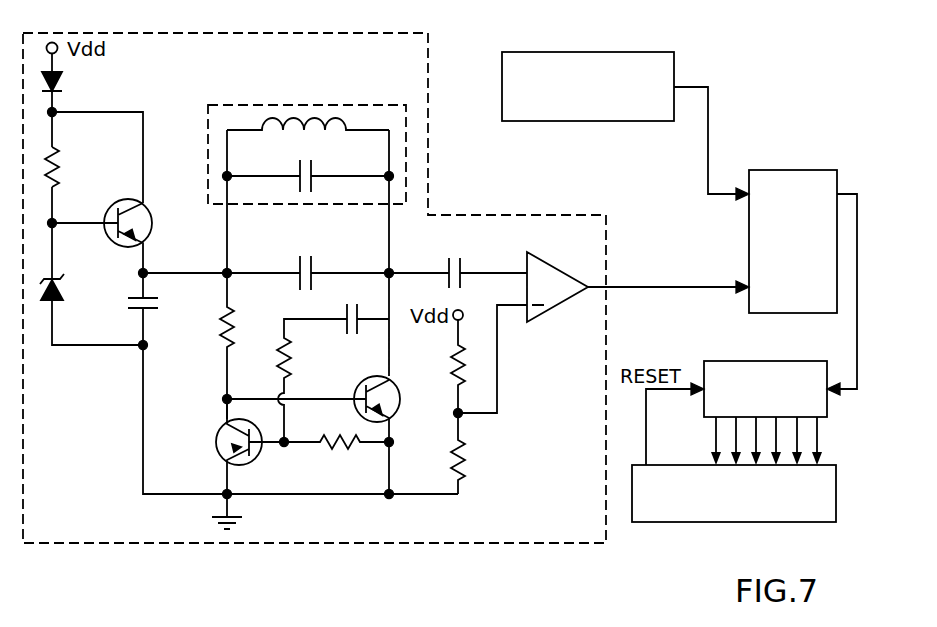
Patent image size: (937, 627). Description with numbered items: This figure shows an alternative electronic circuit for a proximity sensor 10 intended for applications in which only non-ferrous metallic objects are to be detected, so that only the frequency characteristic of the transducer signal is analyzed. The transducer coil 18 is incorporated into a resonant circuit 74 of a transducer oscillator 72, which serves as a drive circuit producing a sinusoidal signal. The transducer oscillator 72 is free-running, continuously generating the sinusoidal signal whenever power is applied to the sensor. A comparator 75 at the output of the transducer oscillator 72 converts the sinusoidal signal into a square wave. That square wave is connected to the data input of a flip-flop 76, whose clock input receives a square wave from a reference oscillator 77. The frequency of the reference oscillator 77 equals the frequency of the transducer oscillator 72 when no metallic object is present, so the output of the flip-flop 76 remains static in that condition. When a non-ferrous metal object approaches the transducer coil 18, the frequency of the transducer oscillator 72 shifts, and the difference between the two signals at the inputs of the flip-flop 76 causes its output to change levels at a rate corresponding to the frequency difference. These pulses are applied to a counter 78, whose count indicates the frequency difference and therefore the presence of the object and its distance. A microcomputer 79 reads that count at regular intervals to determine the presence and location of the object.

The sensor system 10 is at (772, 98).
The transducer coil 18 is at (318, 122).
The transducer oscillator 72 is at (430, 178).
The resonant circuit 74 is at (307, 168).
The comparator 75 is at (545, 315).
The flip-flop 76 is at (793, 241).
The reference oscillator 77 is at (548, 121).
The counter 78 is at (747, 360).
The microcomputer 79 is at (695, 522).